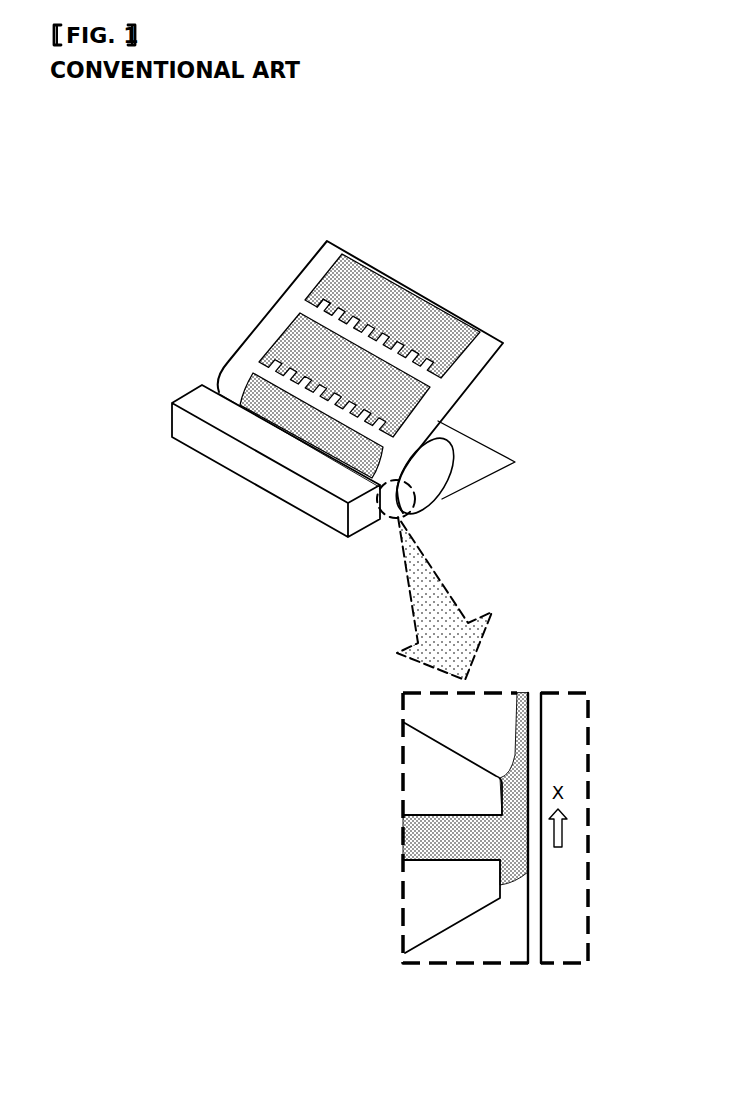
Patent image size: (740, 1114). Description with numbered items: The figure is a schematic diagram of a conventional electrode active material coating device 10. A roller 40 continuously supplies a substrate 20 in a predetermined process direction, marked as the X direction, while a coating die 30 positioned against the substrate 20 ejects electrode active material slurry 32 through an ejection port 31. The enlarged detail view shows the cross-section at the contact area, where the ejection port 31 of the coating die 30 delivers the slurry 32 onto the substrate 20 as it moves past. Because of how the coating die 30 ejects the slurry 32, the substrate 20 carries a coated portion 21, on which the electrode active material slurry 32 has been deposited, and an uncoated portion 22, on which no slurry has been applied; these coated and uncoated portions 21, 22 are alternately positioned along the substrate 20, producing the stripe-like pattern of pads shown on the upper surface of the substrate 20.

The electrode active material coating device 10 is at (184, 163).
The substrate 20 is at (270, 328).
The coated portion 21 is at (393, 300).
The uncoated portion 22 is at (333, 328).
The coating die 30 is at (252, 465).
The ejection port 31 is at (443, 862).
The electrode active material slurry 32 is at (428, 835).
The roller 40 is at (430, 472).